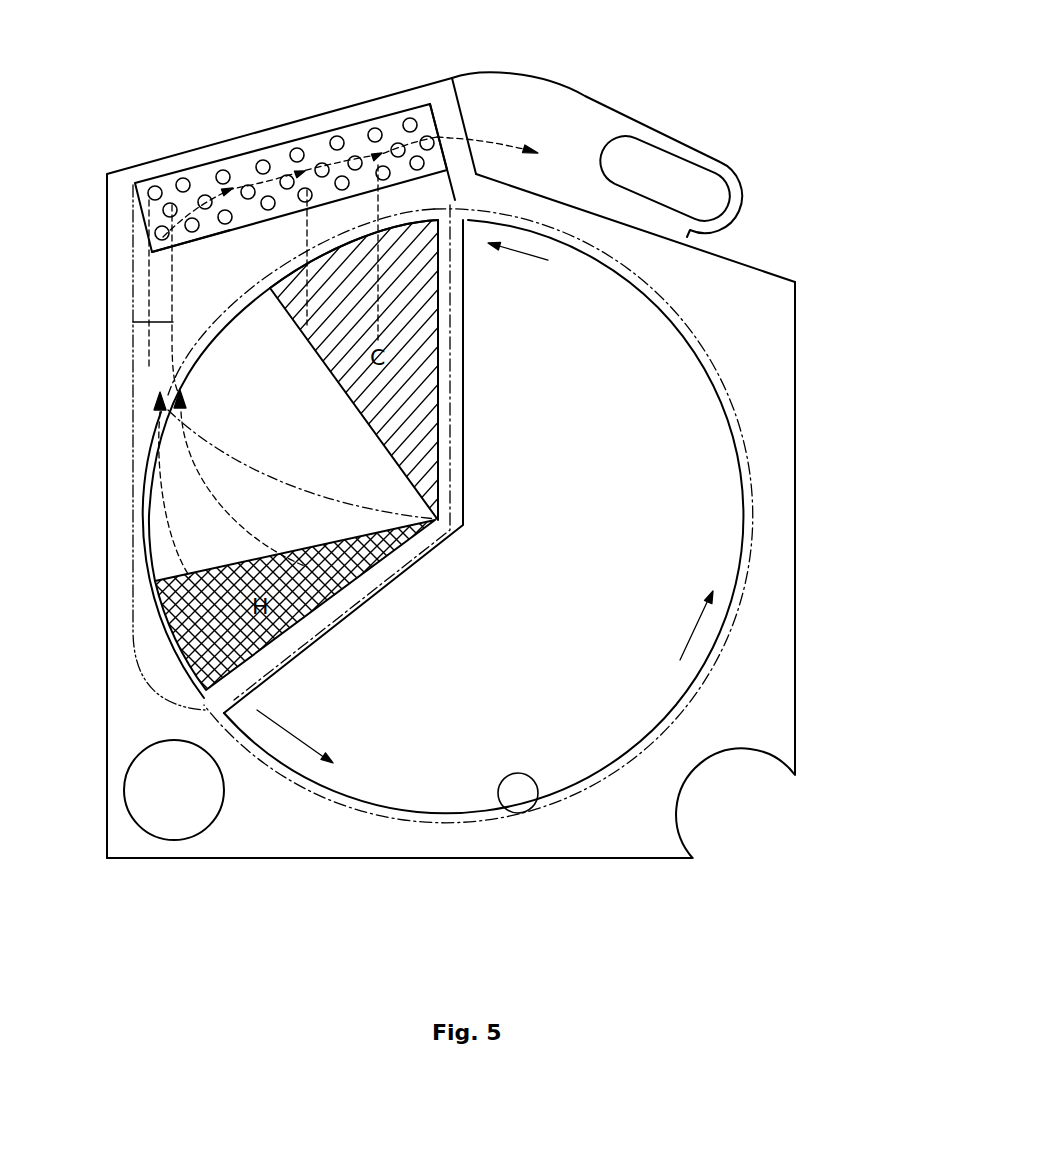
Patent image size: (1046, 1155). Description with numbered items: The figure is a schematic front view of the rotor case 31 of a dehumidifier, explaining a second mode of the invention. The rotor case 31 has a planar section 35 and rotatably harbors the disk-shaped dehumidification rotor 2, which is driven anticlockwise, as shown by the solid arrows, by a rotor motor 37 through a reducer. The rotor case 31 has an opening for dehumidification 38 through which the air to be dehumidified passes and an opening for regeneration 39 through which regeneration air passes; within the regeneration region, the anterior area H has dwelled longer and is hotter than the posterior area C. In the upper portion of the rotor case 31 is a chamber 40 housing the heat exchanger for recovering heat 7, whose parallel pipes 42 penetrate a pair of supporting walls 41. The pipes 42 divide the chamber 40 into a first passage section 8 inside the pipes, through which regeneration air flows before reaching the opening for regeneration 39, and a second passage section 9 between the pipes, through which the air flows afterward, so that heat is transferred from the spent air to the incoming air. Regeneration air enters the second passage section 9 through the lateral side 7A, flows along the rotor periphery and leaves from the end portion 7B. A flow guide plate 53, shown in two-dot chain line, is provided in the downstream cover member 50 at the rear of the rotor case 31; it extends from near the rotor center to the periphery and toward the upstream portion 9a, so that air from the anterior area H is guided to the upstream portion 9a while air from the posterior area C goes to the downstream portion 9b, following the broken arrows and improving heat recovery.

The dehumidification rotor 2 is at (720, 483).
The heat exchanger for recovering heat 7 is at (282, 140).
The lateral side 7A is at (197, 258).
The end portion 7B is at (447, 117).
The first passage section 8 is at (184, 180).
The second passage section 9 is at (250, 185).
The upstream portion of the second passage section 9a is at (145, 184).
The downstream portion of the second passage section 9b is at (423, 107).
The rotor case 31 is at (415, 858).
The planar section 35 is at (305, 835).
The rotor motor 37 is at (177, 820).
The opening for dehumidification 38 is at (541, 800).
The opening for regeneration 39 is at (173, 562).
The chamber for harboring the heat exchanger 40 is at (344, 136).
The supporting walls 41 is at (378, 160).
The pipes 42 is at (307, 185).
The downstream cover member 50 is at (132, 507).
The flow guide plate 53 is at (133, 322).